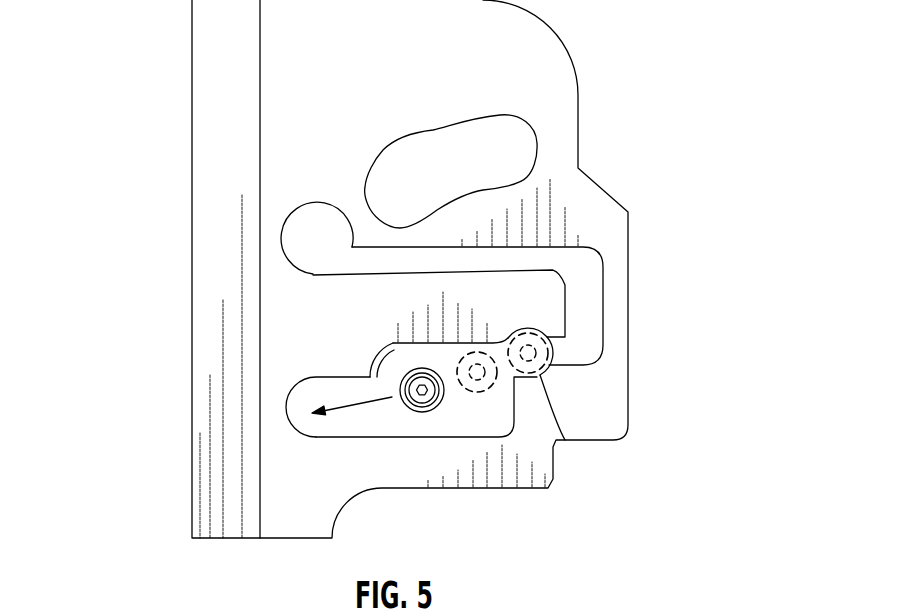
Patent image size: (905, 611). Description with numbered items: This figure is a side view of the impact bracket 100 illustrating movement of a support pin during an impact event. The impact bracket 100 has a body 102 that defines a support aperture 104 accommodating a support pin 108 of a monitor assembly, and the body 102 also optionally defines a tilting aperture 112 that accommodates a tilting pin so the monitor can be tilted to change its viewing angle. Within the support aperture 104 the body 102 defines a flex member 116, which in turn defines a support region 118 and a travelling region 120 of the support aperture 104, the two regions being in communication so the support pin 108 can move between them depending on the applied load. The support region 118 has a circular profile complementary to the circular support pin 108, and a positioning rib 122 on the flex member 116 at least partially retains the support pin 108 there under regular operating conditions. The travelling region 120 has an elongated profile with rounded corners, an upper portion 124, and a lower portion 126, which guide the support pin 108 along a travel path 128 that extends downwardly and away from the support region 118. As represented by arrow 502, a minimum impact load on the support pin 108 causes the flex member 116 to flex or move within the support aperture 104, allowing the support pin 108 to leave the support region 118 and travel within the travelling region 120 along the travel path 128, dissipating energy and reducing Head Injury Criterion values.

The impact bracket 100 is at (128, 45).
The body 102 is at (623, 230).
The support aperture 104 is at (303, 200).
The support pin 108 is at (420, 410).
The tilting aperture 112 is at (432, 133).
The flex member 116 is at (563, 293).
The support region 118 is at (563, 440).
The travelling region 120 is at (342, 378).
The positioning rib 122 is at (510, 332).
The upper portion 124 is at (386, 343).
The lower portion 126 is at (493, 437).
The travel path 128 is at (357, 405).
The arrow 502 is at (710, 188).